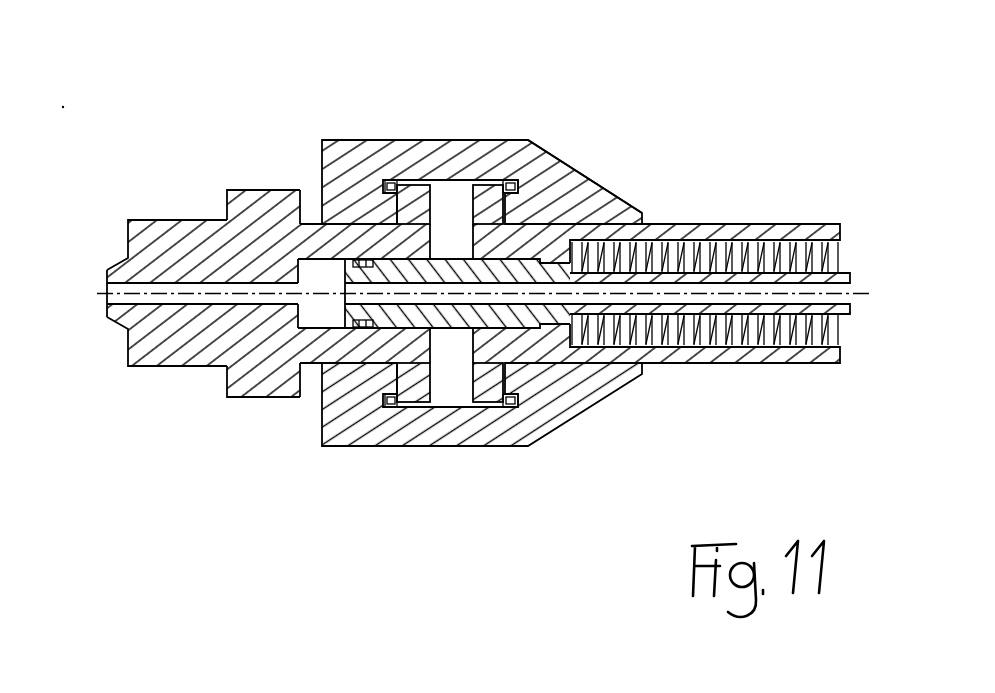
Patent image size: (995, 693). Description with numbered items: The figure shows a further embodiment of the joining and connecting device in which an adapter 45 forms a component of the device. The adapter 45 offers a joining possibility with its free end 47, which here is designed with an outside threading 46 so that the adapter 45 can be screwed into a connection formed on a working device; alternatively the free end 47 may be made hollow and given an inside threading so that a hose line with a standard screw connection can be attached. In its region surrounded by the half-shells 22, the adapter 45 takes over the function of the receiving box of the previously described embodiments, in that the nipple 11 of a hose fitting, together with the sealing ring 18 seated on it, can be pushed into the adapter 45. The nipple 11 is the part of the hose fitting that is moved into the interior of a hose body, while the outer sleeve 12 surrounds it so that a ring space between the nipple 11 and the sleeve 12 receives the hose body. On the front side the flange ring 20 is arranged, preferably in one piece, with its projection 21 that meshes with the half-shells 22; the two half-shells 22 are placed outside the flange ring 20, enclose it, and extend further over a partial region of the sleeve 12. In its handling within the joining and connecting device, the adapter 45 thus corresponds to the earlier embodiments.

The nipple 11 is at (448, 318).
The outer sleeve 12 is at (788, 238).
The sealing ring 18 is at (358, 330).
The flange ring 20 is at (430, 186).
The projection 21 is at (372, 186).
The half-shells 22 is at (500, 148).
The adapter 45 is at (182, 297).
The outside threading 46 is at (190, 221).
The free end 47 is at (142, 243).